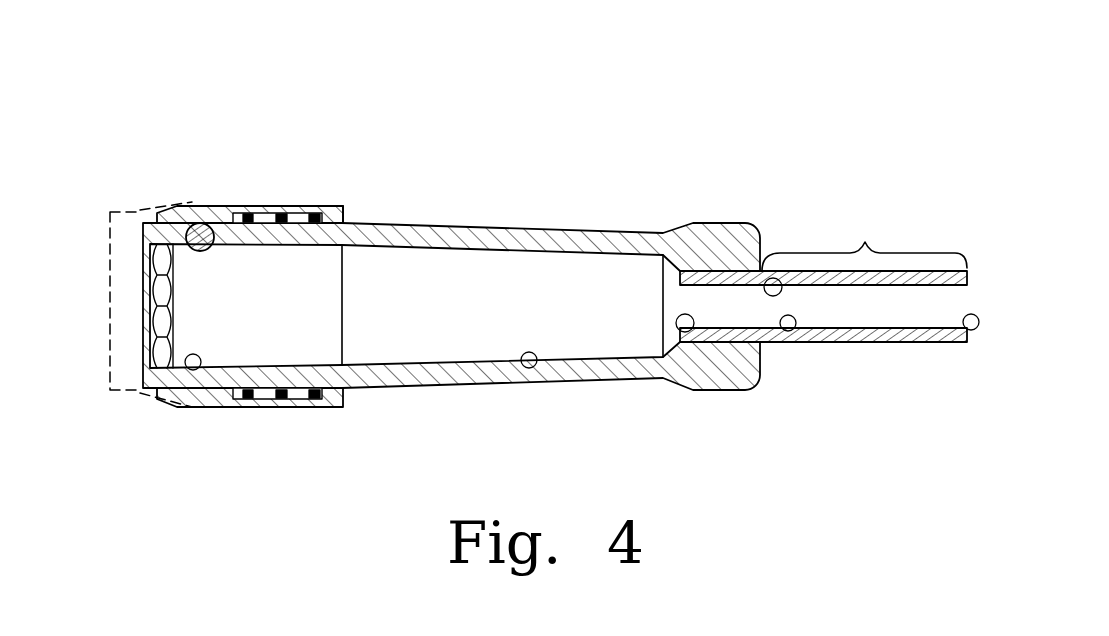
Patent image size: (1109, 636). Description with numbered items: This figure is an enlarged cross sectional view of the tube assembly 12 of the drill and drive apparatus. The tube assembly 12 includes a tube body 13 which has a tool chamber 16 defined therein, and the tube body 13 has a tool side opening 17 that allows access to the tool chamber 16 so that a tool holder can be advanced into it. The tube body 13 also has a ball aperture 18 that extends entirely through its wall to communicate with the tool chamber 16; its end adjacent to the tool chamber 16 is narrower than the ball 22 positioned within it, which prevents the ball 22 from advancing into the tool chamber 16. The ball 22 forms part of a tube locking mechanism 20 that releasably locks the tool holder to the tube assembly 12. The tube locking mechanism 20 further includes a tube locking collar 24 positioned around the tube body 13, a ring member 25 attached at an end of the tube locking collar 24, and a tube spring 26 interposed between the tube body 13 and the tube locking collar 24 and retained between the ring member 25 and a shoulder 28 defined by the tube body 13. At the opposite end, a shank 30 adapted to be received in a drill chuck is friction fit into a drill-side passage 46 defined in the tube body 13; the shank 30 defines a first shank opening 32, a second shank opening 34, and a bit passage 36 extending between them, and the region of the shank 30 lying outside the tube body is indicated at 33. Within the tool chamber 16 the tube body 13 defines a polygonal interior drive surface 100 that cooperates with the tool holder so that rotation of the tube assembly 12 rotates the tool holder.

The tube assembly 12 is at (553, 116).
The tube body 13 is at (595, 232).
The tool chamber 16 is at (529, 368).
The tool side opening 17 is at (152, 247).
The ball aperture 18 is at (214, 242).
The tube locking mechanism 20 is at (285, 308).
The ball 22 is at (194, 249).
The tube locking collar 24 is at (313, 212).
The ring member 25 is at (345, 218).
The tube spring 26 is at (278, 212).
The shoulder 28 is at (240, 212).
The shank 30 is at (791, 322).
The first shank opening 32 is at (677, 325).
The exposed tube region 33 is at (870, 228).
The second shank opening 34 is at (970, 331).
The bit passage 36 is at (788, 331).
The drill-side passage 46 is at (774, 278).
The interior drive surface 100 is at (193, 370).